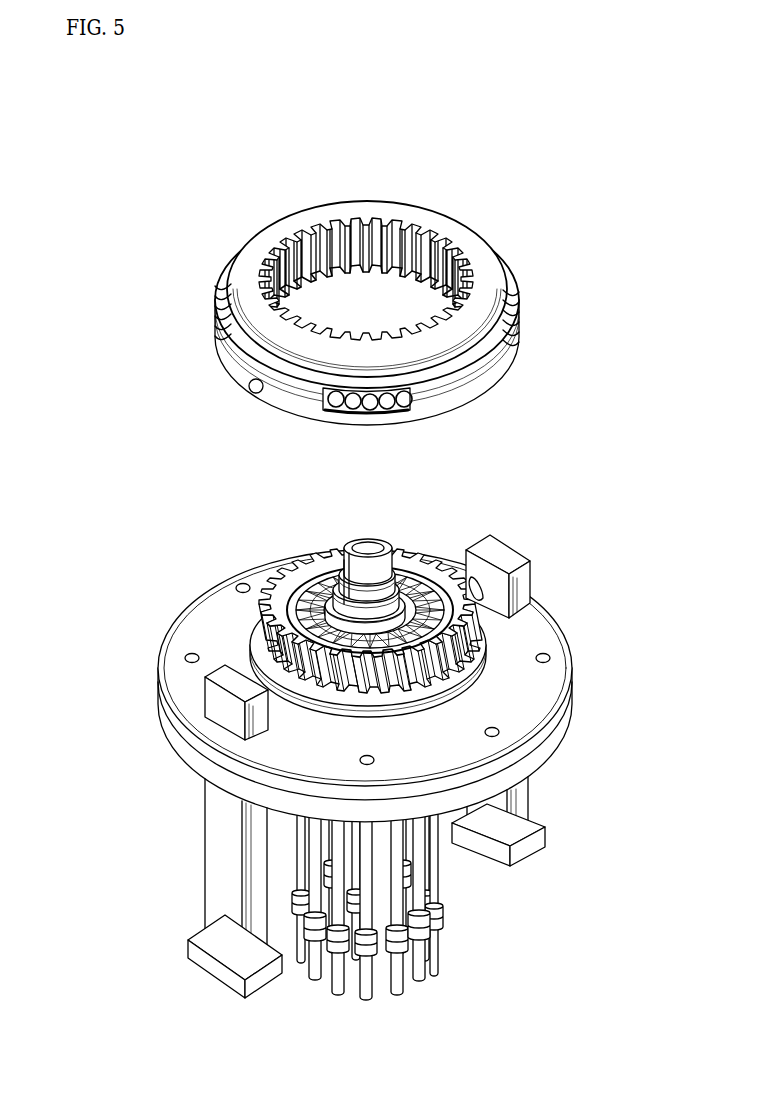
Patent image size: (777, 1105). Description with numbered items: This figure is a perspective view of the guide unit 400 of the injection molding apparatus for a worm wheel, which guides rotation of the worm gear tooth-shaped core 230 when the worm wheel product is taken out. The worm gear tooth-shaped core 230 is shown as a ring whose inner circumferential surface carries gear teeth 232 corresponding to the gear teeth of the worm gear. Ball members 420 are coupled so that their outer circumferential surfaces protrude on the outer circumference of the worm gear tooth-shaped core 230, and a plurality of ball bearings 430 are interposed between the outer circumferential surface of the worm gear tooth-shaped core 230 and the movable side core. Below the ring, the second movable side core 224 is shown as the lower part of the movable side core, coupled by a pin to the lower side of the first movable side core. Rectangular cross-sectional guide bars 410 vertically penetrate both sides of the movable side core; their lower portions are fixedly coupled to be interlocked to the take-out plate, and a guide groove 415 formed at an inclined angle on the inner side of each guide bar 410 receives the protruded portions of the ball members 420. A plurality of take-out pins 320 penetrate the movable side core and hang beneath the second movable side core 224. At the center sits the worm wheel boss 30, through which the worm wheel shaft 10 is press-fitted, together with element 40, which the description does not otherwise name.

The guide unit 400 is at (123, 101).
The gear teeth 232 is at (341, 240).
The worm gear tooth-shaped core 230 is at (384, 248).
The ball bearings 430 is at (214, 300).
The ball members 420 is at (250, 389).
The worm wheel shaft 10 is at (375, 543).
The worm wheel boss 30 is at (298, 570).
The guide bars 410 is at (497, 558).
The carrier plate 40 is at (262, 602).
The guide groove 415 is at (480, 593).
The second movable side core 224 is at (533, 697).
The take-out pins 320 is at (398, 903).